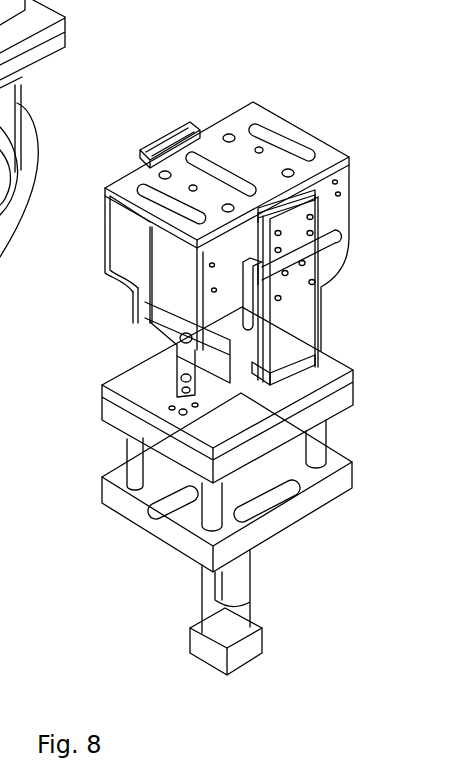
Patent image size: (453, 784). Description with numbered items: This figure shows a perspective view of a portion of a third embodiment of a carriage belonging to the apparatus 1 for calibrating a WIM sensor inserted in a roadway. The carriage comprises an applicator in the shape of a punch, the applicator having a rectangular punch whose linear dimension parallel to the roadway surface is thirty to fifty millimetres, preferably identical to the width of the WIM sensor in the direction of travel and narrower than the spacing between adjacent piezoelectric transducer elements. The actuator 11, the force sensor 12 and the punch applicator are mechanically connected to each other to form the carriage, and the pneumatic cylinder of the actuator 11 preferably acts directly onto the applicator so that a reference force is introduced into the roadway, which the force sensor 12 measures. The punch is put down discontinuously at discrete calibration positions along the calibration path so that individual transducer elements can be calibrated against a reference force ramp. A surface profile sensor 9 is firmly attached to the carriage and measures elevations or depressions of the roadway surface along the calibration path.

The apparatus 1 is at (314, 108).
The surface profile sensor 9 is at (165, 230).
The actuator 11 is at (157, 296).
The force sensor 12 is at (190, 378).